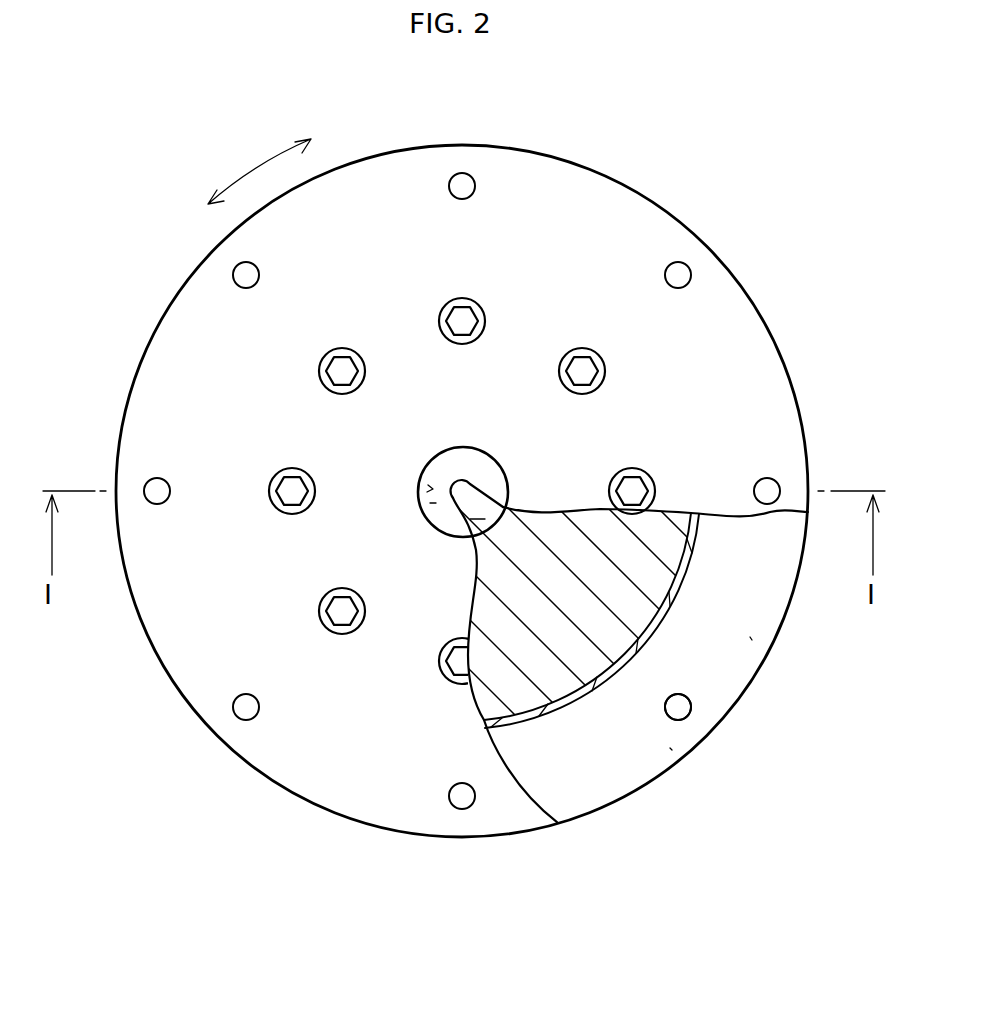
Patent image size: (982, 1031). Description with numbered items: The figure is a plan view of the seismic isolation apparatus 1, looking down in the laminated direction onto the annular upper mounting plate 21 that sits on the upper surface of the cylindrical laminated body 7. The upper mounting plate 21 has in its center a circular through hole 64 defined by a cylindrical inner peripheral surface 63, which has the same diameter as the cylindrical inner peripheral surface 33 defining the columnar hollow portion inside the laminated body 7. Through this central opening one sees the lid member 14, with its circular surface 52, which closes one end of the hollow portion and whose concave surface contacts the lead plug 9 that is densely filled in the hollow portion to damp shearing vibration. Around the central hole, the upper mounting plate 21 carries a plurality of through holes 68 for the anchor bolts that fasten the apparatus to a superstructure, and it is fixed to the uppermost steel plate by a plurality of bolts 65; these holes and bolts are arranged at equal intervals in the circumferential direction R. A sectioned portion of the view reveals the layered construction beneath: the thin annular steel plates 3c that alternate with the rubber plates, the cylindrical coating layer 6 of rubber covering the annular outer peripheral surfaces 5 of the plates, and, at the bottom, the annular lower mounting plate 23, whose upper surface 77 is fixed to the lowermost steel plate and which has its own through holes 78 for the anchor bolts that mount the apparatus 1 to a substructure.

The seismic isolation apparatus 1 is at (441, 491).
The annular steel plates 3c is at (553, 667).
The annular outer peripheral surfaces 5 is at (527, 710).
The cylindrical coating layer 6 is at (656, 620).
The cylindrical laminated body 7 is at (668, 619).
The lead plug 9 is at (478, 502).
The lid member 14 is at (437, 477).
The annular upper mounting plate 21 is at (441, 491).
The annular lower mounting plate 23 is at (750, 637).
The cylindrical inner peripheral surface 33 is at (483, 521).
The circular surface 52 is at (433, 503).
The cylindrical inner peripheral surface 63 is at (428, 487).
The circular through hole 64 is at (446, 453).
The bolts 65 is at (580, 365).
The through holes 68 is at (240, 274).
The upper surface 77 is at (670, 748).
The through holes 78 is at (686, 708).
The circumferential direction R is at (256, 168).